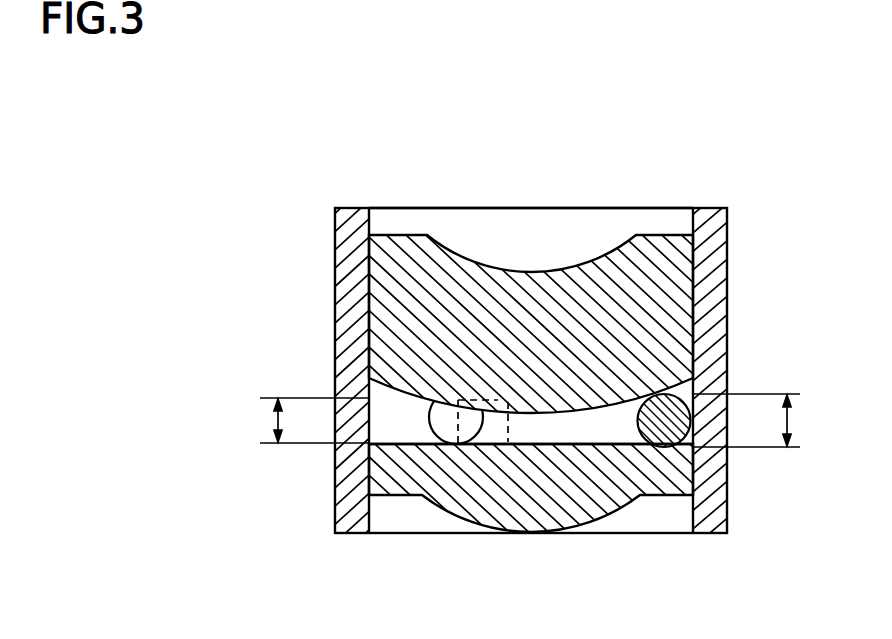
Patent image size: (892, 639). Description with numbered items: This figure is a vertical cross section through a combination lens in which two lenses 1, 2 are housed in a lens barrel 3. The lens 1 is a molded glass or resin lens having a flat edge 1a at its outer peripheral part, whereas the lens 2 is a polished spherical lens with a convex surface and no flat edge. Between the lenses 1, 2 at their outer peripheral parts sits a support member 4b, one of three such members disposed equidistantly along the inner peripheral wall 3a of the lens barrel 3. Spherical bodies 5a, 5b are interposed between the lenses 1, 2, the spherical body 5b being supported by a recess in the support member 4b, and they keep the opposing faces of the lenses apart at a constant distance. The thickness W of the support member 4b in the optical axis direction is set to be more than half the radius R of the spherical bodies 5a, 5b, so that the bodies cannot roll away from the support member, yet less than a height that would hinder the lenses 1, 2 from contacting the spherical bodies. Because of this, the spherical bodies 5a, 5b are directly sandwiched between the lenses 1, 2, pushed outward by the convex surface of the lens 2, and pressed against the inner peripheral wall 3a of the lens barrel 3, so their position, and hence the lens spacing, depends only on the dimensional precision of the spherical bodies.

The lens 1 is at (603, 502).
The flat edge 1a is at (530, 444).
The lens 2 is at (548, 285).
The lens barrel 3 is at (347, 508).
The inner peripheral wall 3a is at (690, 222).
The support member 4b is at (497, 435).
The spherical body 5a is at (720, 448).
The spherical body 5b is at (441, 420).
The thickness of the support members W is at (296, 422).
The radius of the spherical bodies R is at (760, 420).